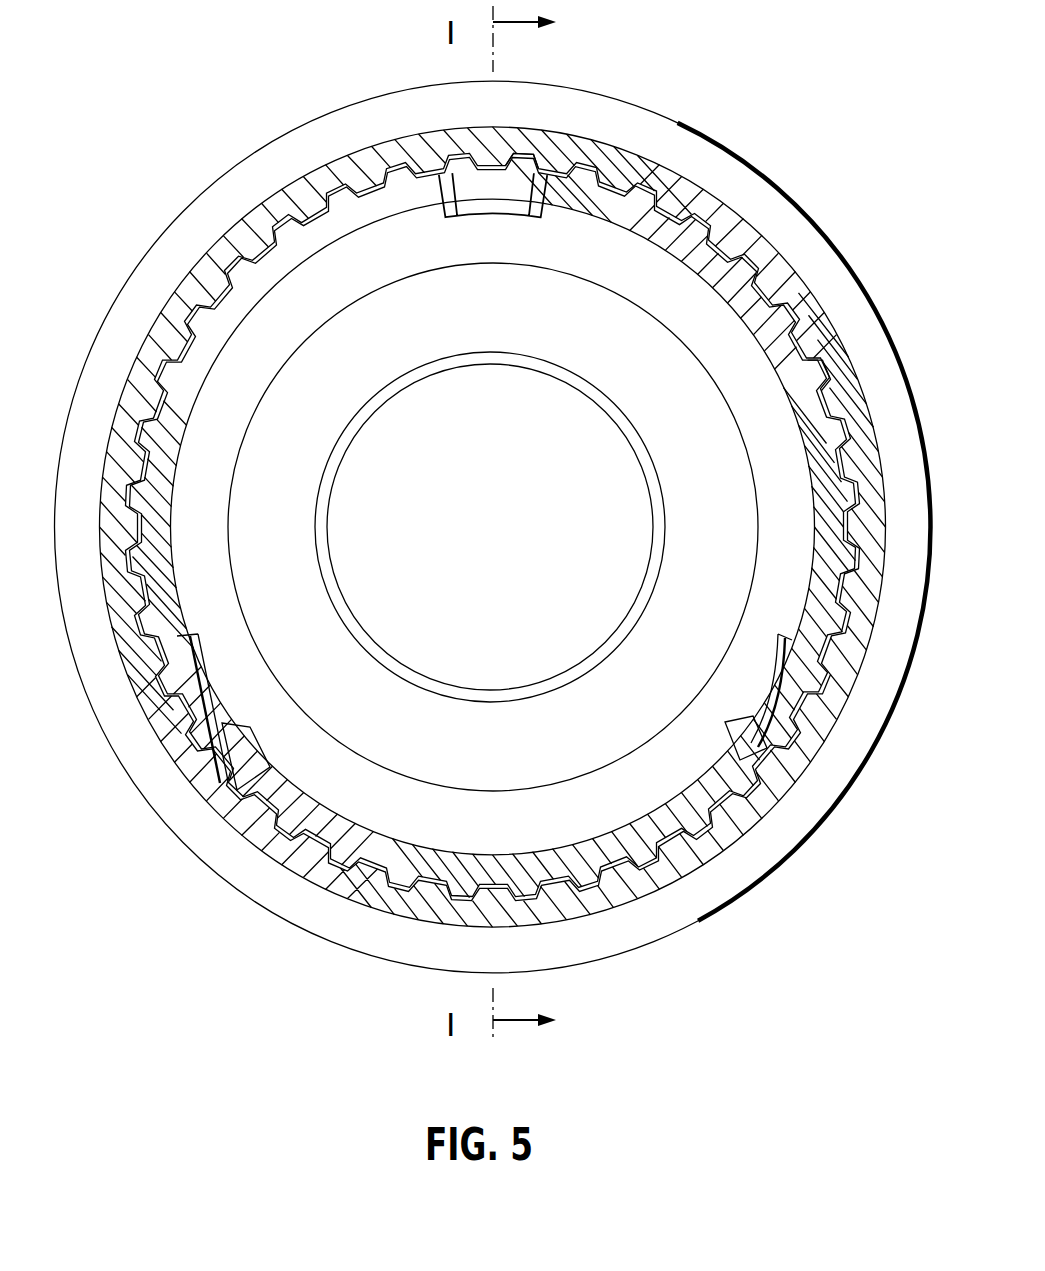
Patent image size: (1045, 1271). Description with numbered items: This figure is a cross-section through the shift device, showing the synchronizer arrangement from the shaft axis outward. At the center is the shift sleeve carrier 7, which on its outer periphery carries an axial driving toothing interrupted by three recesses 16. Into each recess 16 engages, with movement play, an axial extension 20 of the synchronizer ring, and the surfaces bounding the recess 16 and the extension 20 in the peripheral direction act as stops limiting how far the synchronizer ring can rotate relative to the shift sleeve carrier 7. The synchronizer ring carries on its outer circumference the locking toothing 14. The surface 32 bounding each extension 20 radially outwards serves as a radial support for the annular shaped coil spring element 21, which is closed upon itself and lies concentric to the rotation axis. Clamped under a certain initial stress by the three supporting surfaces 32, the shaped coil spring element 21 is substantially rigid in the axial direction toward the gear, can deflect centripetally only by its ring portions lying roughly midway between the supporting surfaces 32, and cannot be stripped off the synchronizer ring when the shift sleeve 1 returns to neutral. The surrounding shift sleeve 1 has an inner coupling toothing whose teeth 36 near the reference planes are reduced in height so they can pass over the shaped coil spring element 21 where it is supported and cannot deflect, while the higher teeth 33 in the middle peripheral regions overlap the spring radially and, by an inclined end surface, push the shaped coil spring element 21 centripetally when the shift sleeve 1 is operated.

The shift sleeve 1 is at (758, 888).
The shift sleeve carrier 7 is at (424, 664).
The locking toothing 14 is at (545, 150).
The recess 16 is at (741, 722).
The axial extension 20 is at (777, 668).
The shaped coil spring element 21 is at (473, 178).
The supporting surface 32 is at (505, 160).
The higher teeth 33 is at (485, 905).
The reduced-height teeth 36 is at (815, 715).